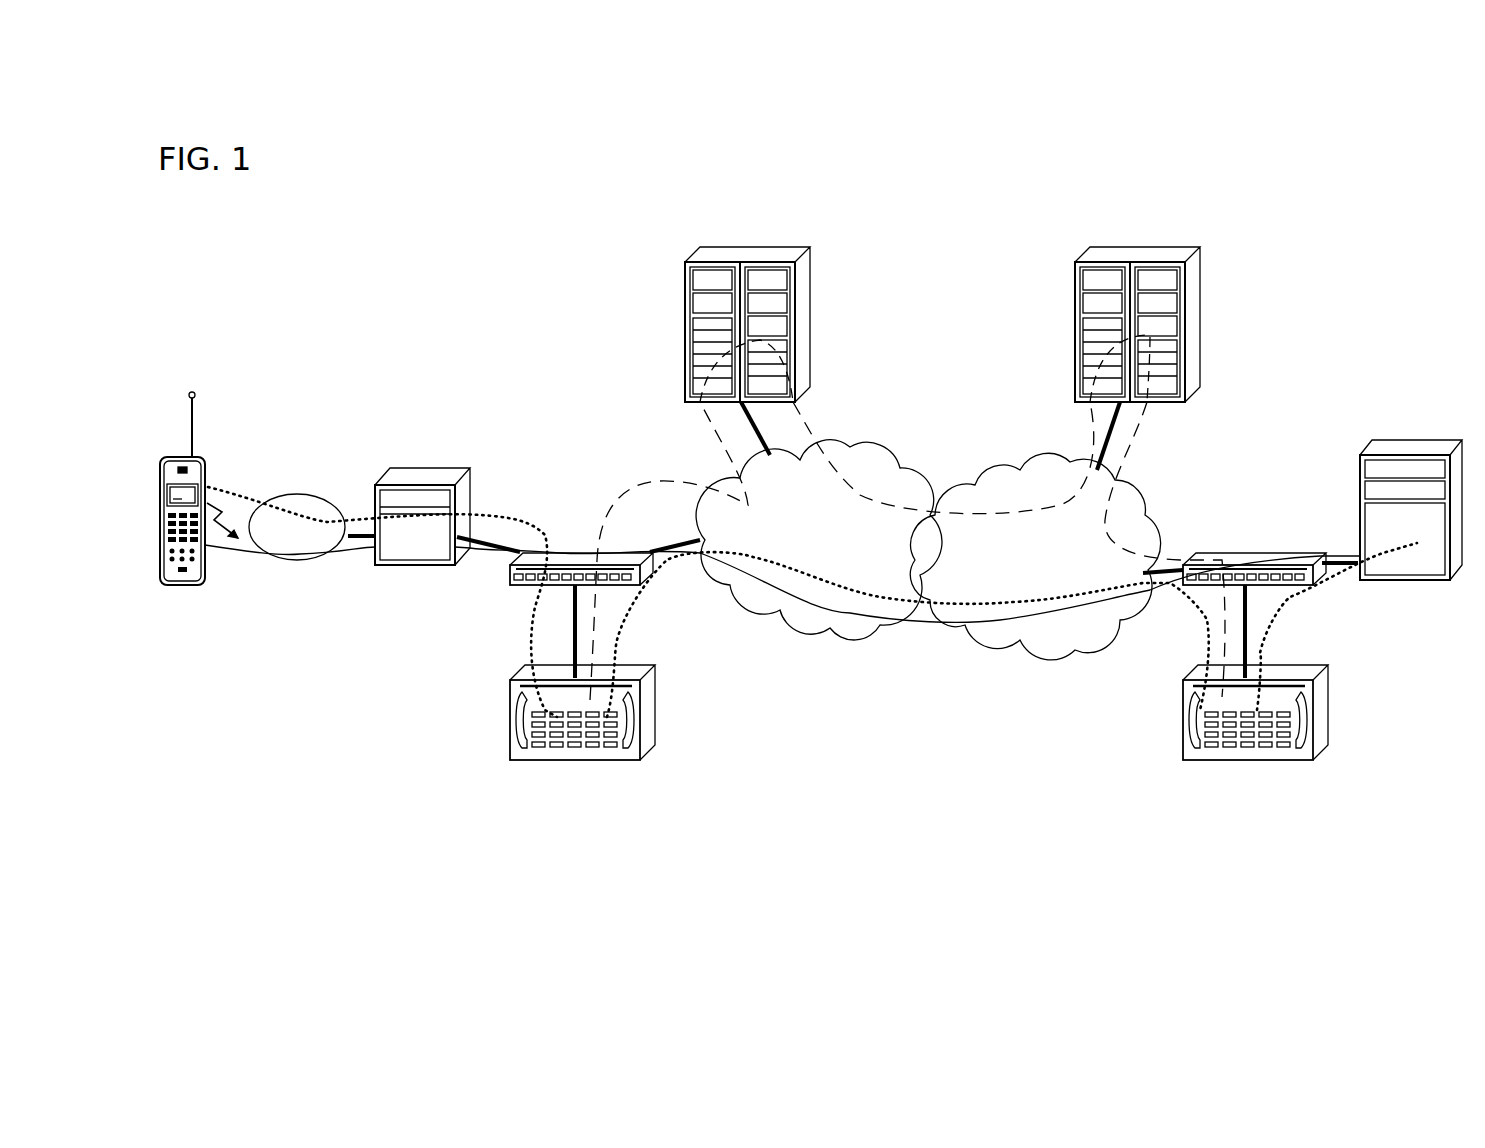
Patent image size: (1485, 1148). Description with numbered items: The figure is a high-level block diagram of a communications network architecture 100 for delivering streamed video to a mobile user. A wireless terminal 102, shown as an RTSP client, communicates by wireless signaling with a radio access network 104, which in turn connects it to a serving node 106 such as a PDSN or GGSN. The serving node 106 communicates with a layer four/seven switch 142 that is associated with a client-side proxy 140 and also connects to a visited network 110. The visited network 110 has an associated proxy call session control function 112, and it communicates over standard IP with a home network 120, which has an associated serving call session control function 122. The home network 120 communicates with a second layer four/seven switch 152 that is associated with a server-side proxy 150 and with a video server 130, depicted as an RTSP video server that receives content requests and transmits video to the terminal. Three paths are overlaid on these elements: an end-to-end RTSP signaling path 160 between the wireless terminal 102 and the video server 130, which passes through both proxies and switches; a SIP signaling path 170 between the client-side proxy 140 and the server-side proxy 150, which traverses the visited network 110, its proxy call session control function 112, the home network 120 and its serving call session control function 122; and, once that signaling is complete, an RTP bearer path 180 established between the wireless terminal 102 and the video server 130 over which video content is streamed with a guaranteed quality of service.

The communications network architecture 100 is at (230, 214).
The wireless terminal 102 is at (183, 590).
The radio access network 104 is at (277, 565).
The serving node 106 is at (405, 568).
The visited network 110 is at (838, 632).
The proxy call session control function 112 is at (806, 310).
The home network 120 is at (1033, 642).
The serving call session control function 122 is at (1196, 310).
The video server 130 is at (1357, 462).
The client-side proxy 140 is at (656, 690).
The layer 4/7 switch 142 is at (508, 572).
The server-side proxy 150 is at (1330, 690).
The layer 4/7 switch 152 is at (1210, 550).
The RTSP signaling path 160 is at (255, 487).
The SIP signaling path 170 is at (942, 480).
The RTP bearer path 180 is at (360, 550).